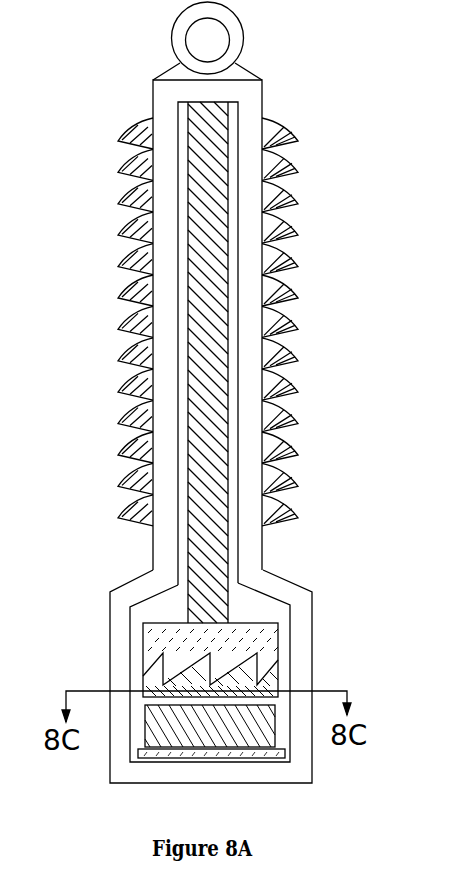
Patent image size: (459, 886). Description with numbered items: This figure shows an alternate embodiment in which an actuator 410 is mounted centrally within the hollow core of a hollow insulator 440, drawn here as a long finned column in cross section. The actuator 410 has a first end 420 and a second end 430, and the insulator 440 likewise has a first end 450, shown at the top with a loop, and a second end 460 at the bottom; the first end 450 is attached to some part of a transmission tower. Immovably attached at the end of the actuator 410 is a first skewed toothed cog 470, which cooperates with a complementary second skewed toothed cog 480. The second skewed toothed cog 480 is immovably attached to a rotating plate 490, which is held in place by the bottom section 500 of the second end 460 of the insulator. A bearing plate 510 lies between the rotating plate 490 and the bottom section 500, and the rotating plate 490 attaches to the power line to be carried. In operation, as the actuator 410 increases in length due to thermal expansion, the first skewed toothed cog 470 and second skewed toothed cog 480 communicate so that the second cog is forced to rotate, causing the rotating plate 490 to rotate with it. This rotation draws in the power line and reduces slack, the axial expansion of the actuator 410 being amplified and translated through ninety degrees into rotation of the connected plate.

The actuator 410 is at (222, 273).
The first end of actuator 420 is at (228, 116).
The second end of actuator 430 is at (232, 607).
The hollow insulator 440 is at (296, 233).
The first end of insulator 450 is at (262, 80).
The second end of insulator 460 is at (270, 575).
The first skewed toothed cog 470 is at (262, 642).
The second skewed toothed cog 480 is at (148, 682).
The rotating plate 490 is at (275, 705).
The bottom section of second end of insulator 500 is at (245, 778).
The bearing plate 510 is at (285, 755).